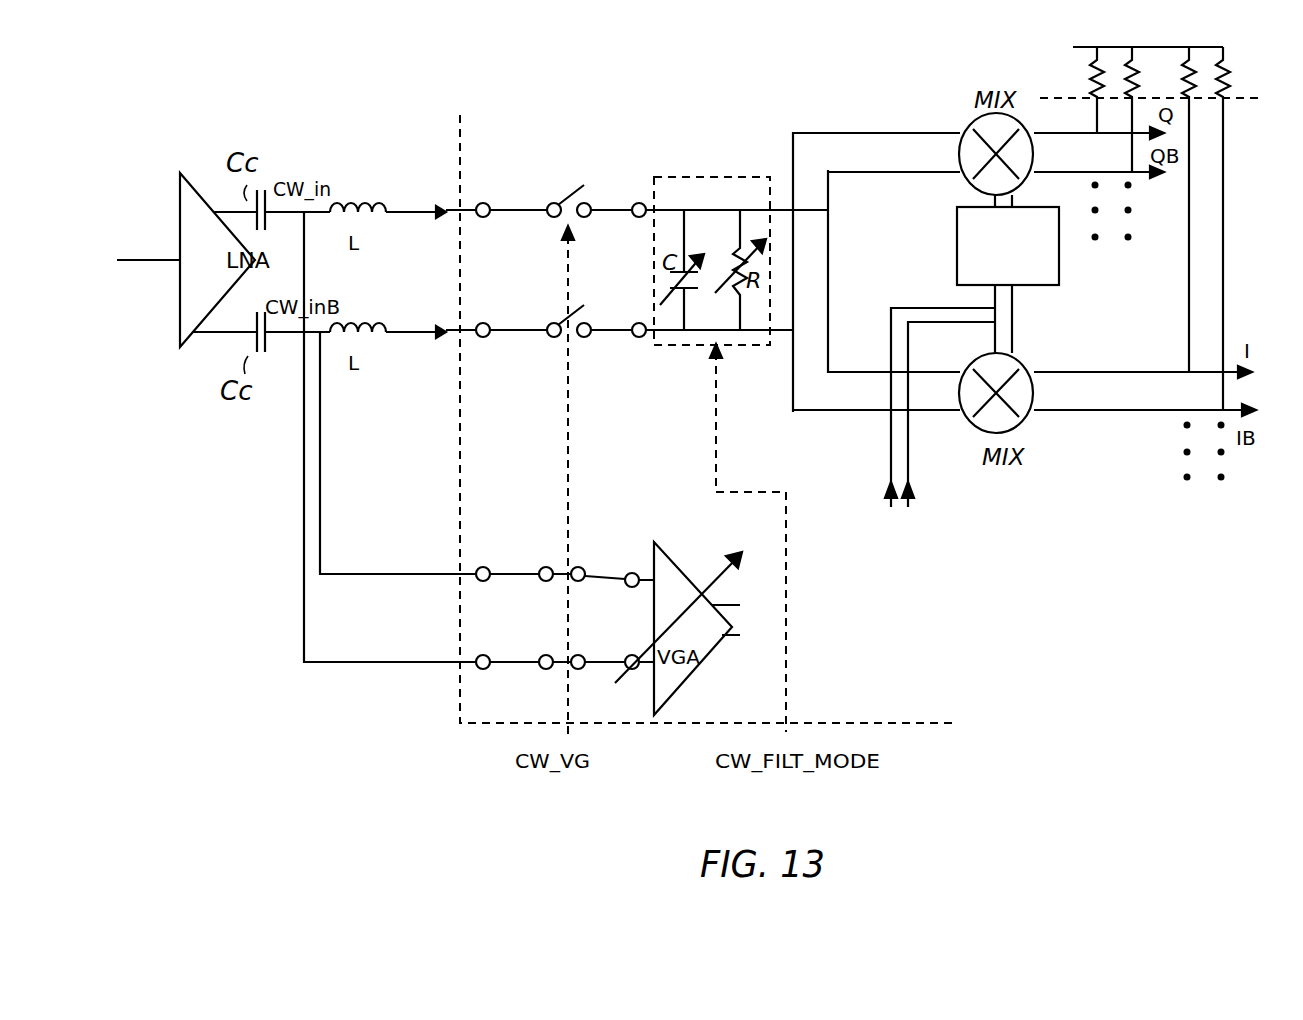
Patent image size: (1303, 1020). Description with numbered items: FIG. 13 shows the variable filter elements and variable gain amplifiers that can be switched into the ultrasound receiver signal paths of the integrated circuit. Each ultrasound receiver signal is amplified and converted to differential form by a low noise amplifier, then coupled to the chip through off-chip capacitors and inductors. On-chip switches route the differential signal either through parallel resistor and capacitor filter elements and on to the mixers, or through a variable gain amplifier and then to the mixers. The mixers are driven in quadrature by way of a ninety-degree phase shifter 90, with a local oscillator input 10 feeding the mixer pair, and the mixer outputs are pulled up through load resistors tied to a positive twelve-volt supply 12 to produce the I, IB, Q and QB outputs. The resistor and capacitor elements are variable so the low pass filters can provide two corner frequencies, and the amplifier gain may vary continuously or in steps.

The 90 degree phase shifter 90 is at (1008, 274).
The +12 supply with load resistors 12 is at (1149, 212).
The LO local oscillator input 10 is at (940, 407).